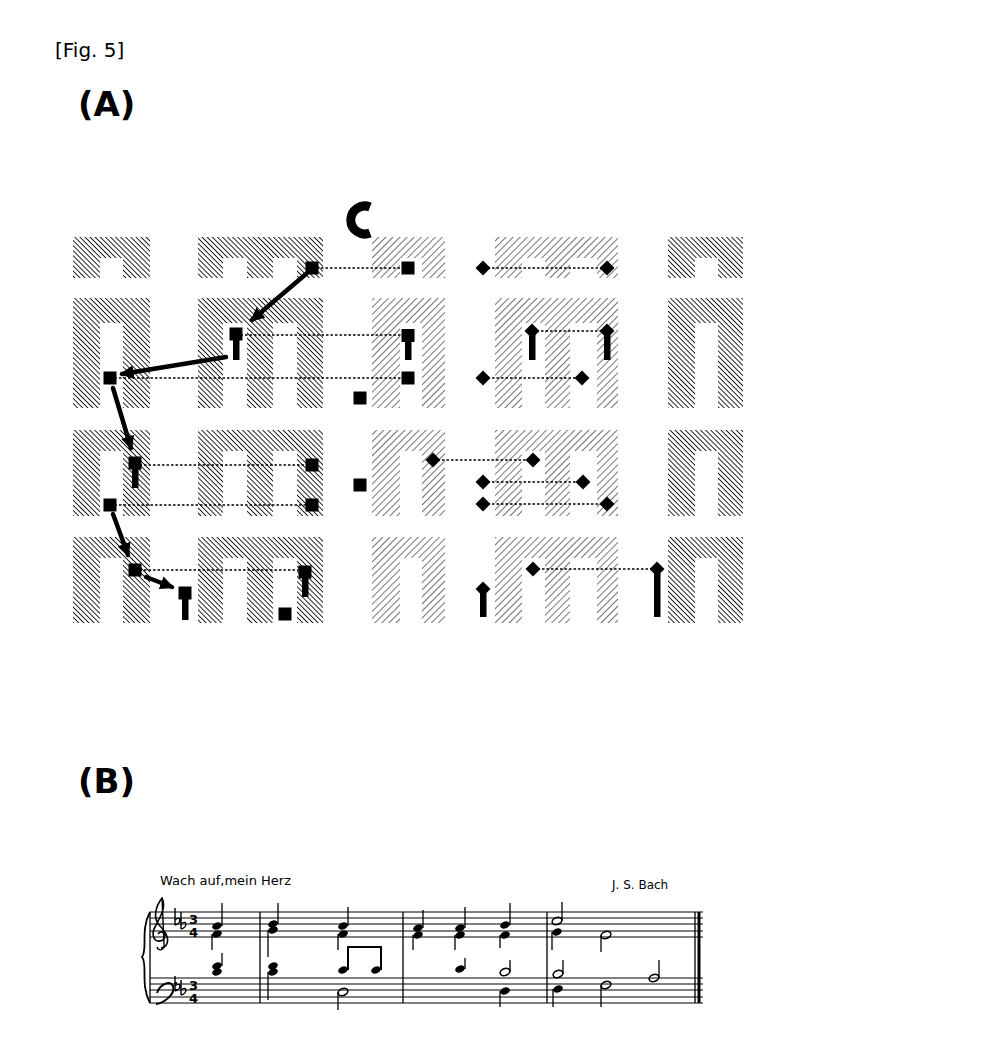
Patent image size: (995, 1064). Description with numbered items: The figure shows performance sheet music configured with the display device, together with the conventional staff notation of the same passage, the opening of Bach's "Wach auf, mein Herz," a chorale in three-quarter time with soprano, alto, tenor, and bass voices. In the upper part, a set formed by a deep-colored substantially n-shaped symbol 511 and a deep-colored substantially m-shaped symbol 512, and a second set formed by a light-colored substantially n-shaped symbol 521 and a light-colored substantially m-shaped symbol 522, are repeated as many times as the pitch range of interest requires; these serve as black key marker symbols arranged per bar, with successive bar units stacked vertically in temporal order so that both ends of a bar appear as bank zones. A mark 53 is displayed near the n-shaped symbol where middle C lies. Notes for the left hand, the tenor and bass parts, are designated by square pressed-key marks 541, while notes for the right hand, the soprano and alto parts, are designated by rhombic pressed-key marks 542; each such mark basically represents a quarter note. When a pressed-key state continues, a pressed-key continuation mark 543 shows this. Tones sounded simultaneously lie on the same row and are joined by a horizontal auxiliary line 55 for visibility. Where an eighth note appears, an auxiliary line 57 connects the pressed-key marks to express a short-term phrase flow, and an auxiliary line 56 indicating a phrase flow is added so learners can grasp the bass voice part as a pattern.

The deep-colored substantially n-shaped symbol 511 is at (87, 620).
The deep-colored substantially m-shaped symbol 512 is at (207, 620).
The light-colored substantially n-shaped symbol 521 is at (382, 620).
The light-colored substantially m-shaped symbol 522 is at (512, 620).
The mark 53 is at (358, 200).
The square pressed-key mark 541 is at (408, 260).
The rhombic pressed-key mark 542 is at (483, 260).
The pressed-key continuation mark 543 is at (614, 328).
The horizontal auxiliary line 55 is at (535, 258).
The auxiliary line indicating a phrase flow 56 is at (172, 352).
The auxiliary line connecting the pressed-key marks 57 is at (372, 400).